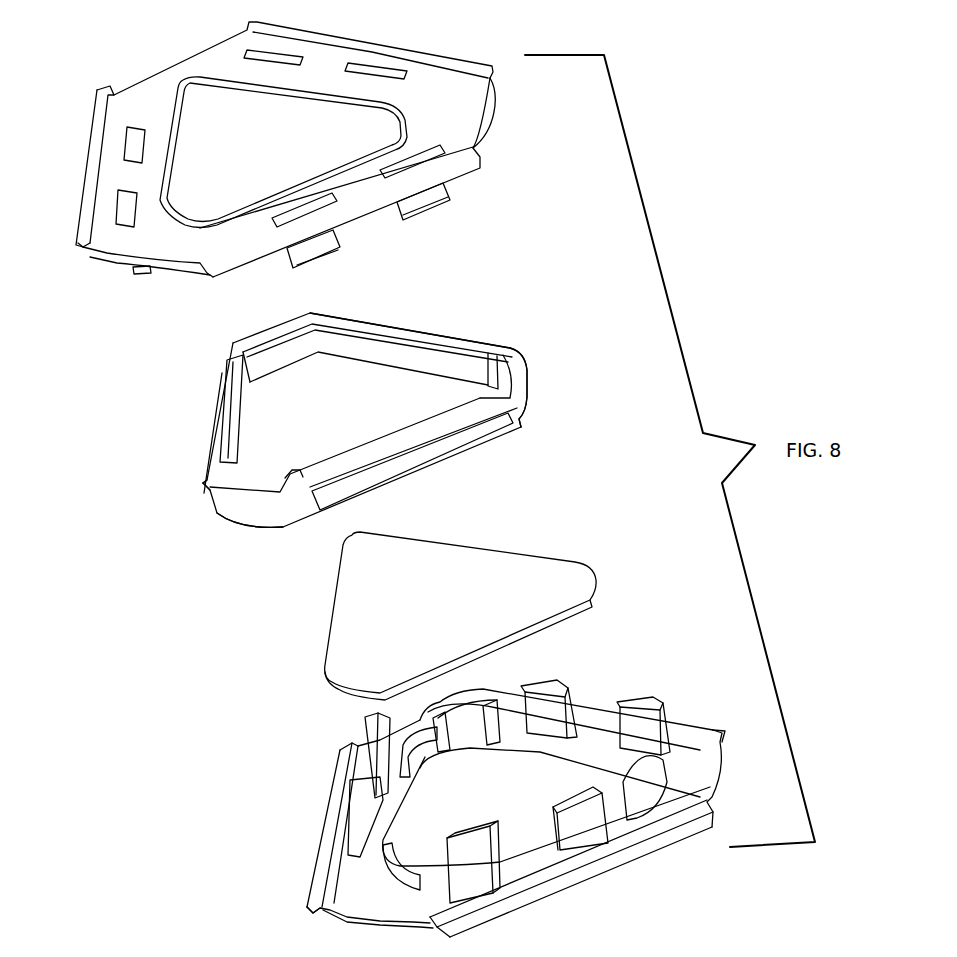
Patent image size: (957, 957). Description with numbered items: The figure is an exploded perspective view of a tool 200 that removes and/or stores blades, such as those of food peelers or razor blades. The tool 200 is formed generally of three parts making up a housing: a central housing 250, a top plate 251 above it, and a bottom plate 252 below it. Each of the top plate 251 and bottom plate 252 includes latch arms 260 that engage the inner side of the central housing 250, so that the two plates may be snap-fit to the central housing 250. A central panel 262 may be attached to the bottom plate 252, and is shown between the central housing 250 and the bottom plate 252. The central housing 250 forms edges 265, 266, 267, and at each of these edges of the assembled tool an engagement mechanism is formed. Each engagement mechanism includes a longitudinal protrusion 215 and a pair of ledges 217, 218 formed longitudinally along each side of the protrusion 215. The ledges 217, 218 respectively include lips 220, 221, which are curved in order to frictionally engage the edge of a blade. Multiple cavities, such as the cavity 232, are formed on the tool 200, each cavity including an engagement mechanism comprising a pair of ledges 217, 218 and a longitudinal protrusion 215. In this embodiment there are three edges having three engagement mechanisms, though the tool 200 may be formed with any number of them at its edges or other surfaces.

The tool 200 is at (196, 864).
The longitudinal protrusion 215 is at (527, 413).
The ledge 217 is at (373, 52).
The ledge 218 is at (596, 718).
The lip 220 is at (720, 738).
The lip 221 is at (492, 82).
The cavity 232 is at (696, 950).
The central housing 250 is at (236, 508).
The top plate 251 is at (221, 62).
The bottom plate 252 is at (378, 907).
The latch arms 260 is at (410, 210).
The central panel 262 is at (475, 560).
The edge 265 is at (297, 522).
The edge 266 is at (227, 390).
The edge 267 is at (413, 325).